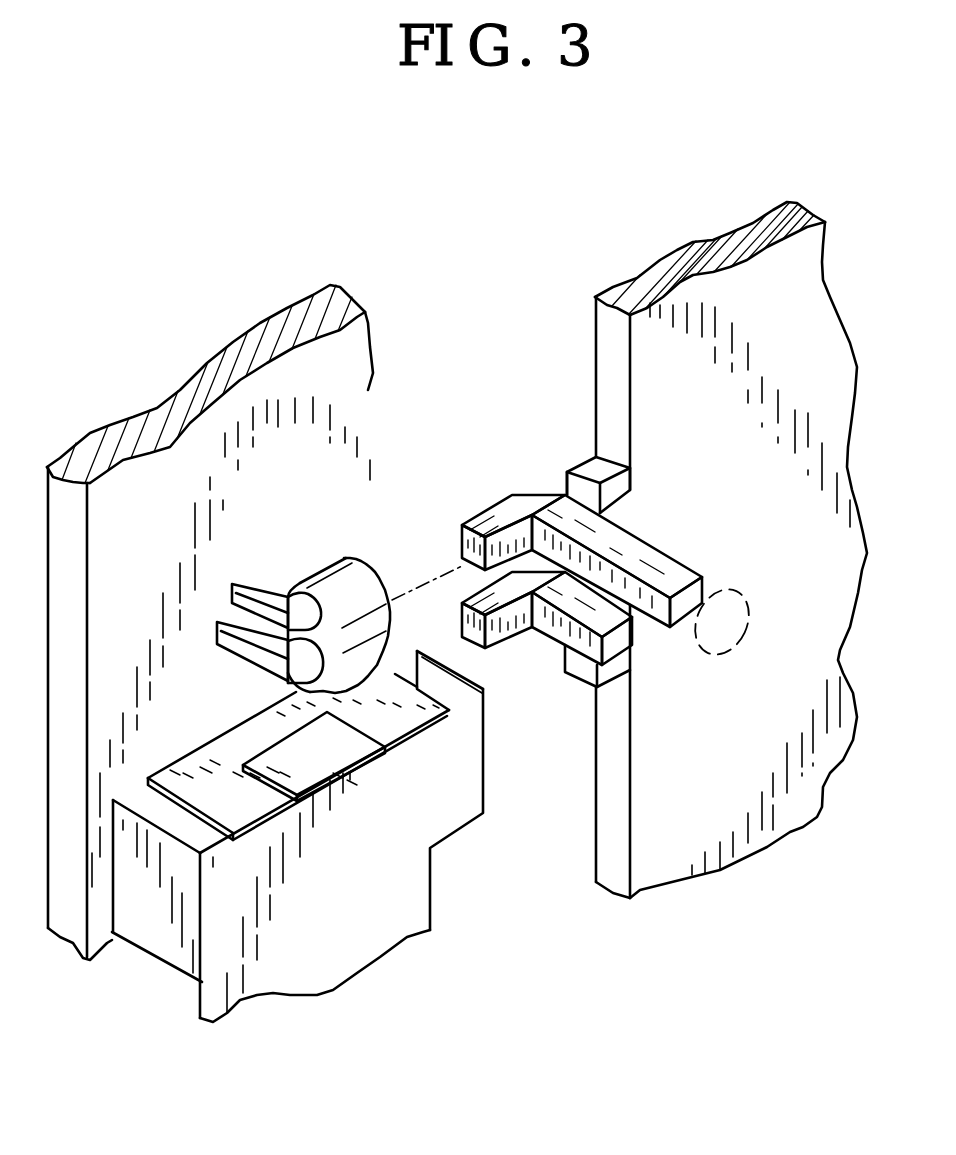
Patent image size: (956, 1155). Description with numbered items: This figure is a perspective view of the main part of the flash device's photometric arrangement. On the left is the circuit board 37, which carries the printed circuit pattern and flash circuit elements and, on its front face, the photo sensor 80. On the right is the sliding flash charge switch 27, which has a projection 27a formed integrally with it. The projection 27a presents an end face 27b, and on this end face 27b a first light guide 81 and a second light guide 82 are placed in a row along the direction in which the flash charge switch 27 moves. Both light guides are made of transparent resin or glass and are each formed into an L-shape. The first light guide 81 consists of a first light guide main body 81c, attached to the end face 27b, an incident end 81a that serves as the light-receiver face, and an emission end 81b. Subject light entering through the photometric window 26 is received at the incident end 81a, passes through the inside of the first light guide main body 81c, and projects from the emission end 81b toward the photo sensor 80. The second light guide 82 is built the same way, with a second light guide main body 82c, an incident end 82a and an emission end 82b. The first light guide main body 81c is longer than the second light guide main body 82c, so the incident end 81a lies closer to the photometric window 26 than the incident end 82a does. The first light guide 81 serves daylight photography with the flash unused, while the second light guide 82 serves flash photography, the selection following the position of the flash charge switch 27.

The photometric window 26 is at (740, 592).
The flash charge switch 27 is at (672, 550).
The projection 27a is at (600, 468).
The end face 27b is at (560, 477).
The circuit board 37 is at (187, 463).
The photo sensor 80 is at (337, 573).
The first light guide 81 is at (581, 528).
The incident end 81a is at (682, 609).
The emission end 81b is at (462, 532).
The first light guide main body 81c is at (643, 560).
The second light guide 82 is at (537, 663).
The incident end 82a is at (620, 643).
The emission end 82b is at (460, 608).
The second light guide main body 82c is at (585, 645).